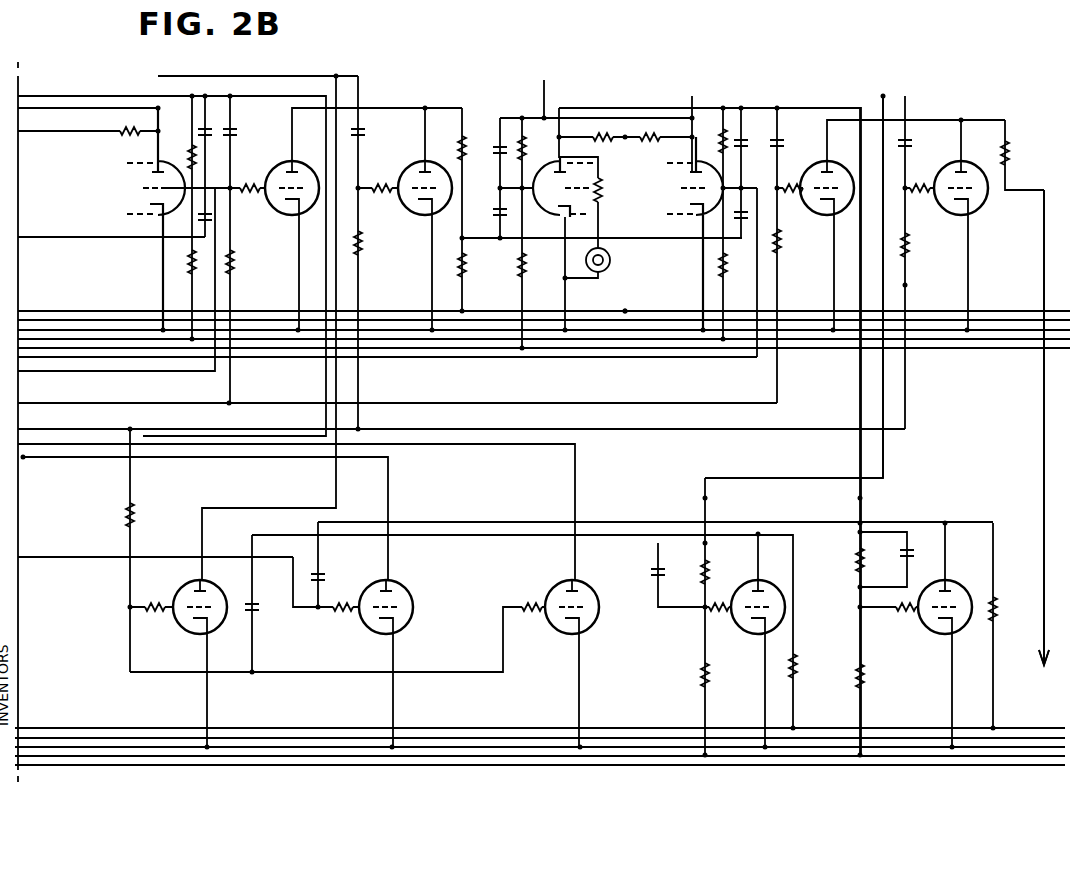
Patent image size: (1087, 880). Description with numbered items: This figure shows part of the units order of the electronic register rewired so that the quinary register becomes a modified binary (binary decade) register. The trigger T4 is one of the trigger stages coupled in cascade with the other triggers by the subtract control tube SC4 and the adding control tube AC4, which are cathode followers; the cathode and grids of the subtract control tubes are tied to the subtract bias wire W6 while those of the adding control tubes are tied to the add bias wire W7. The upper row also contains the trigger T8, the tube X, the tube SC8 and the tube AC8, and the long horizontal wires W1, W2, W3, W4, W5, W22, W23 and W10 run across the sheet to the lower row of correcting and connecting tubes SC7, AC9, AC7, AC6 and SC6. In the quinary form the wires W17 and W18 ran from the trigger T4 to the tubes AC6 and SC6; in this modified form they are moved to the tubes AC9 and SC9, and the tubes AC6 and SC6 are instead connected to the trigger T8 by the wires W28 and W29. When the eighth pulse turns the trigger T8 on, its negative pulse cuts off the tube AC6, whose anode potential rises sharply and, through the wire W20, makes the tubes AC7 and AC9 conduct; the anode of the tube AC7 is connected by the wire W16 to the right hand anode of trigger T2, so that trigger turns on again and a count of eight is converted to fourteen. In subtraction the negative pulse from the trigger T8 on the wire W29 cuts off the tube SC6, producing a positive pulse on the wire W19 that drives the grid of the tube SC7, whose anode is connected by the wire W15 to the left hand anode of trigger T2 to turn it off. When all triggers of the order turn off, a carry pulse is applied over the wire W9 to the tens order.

The wire W1 is at (372, 315).
The wire W2 is at (443, 322).
The wire W3 is at (493, 332).
The wire W4 is at (545, 341).
The wire W5 is at (601, 350).
The subtract bias wire W6 is at (232, 298).
The add bias wire W7 is at (360, 300).
The carry wire W9 is at (1044, 494).
The wire W10 is at (96, 558).
The wire W15 is at (23, 458).
The wire W16 is at (78, 446).
The wire W17 is at (130, 108).
The wire W18 is at (80, 96).
The wire W19 is at (520, 524).
The wire W20 is at (436, 536).
The wire W22 is at (35, 311).
The wire W23 is at (218, 187).
The wire W28 is at (544, 100).
The wire W29 is at (648, 108).
The trigger T4 is at (150, 219).
The trigger T8 is at (679, 233).
The tube X is at (563, 187).
The subtract control tube SC4 is at (280, 212).
The subtraction control correcting tube SC6 is at (930, 622).
The subtraction control correcting tube SC7 is at (372, 620).
The tube SC8 is at (812, 212).
The adding control tube AC4 is at (410, 212).
The adding control connecting tube AC6 is at (740, 622).
The adding control connecting tube AC7 is at (555, 620).
The tube AC8 is at (945, 212).
The adding control connecting tube AC9 is at (182, 620).